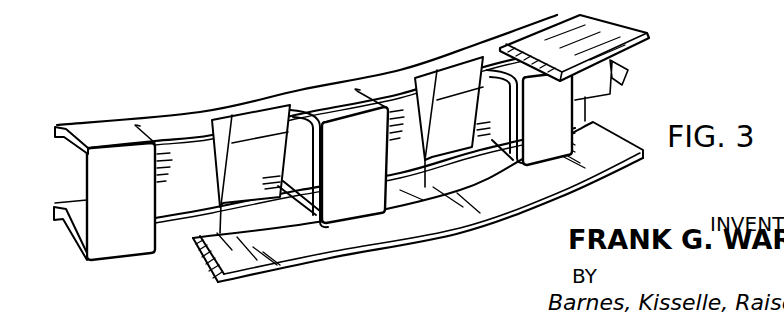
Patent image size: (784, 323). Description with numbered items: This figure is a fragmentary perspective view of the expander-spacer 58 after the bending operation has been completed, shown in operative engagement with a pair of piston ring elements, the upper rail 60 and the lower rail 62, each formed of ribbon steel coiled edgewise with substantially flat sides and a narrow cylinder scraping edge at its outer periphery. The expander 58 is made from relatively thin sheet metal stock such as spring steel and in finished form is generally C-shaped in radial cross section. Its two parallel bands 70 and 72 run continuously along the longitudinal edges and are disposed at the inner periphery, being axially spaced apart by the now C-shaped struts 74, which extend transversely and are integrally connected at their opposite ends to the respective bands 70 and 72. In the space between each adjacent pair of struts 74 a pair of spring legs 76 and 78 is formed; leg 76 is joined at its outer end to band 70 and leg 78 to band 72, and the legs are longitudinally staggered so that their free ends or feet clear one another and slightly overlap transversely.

The expander-spacer 58 is at (144, 112).
The upper rail 60 is at (642, 33).
The lower rail 62 is at (250, 278).
The band 70 is at (57, 126).
The band 72 is at (55, 215).
The strut 74 is at (340, 127).
The spring leg 76 is at (262, 120).
The spring leg 78 is at (177, 230).